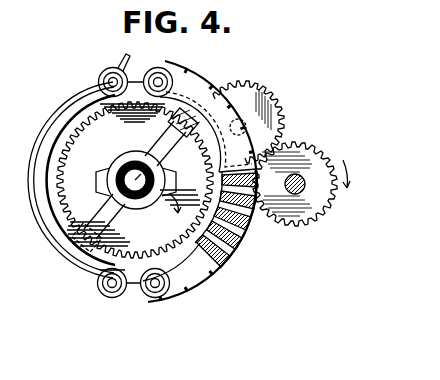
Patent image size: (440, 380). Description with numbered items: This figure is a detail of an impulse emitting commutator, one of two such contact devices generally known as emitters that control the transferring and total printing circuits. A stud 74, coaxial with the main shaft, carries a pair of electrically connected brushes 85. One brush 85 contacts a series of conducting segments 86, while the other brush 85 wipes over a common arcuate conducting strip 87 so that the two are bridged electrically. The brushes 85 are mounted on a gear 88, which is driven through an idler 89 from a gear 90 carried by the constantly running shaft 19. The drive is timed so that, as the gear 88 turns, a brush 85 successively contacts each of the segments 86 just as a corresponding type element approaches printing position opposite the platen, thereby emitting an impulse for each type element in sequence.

The constantly running shaft 19 is at (298, 191).
The stud 74 is at (124, 166).
The brushes 85 is at (158, 112).
The conducting segments 86 is at (255, 212).
The common arcuate conducting strip 87 is at (50, 217).
The gear 88 is at (137, 255).
The idler 89 is at (265, 98).
The gear 90 is at (315, 155).